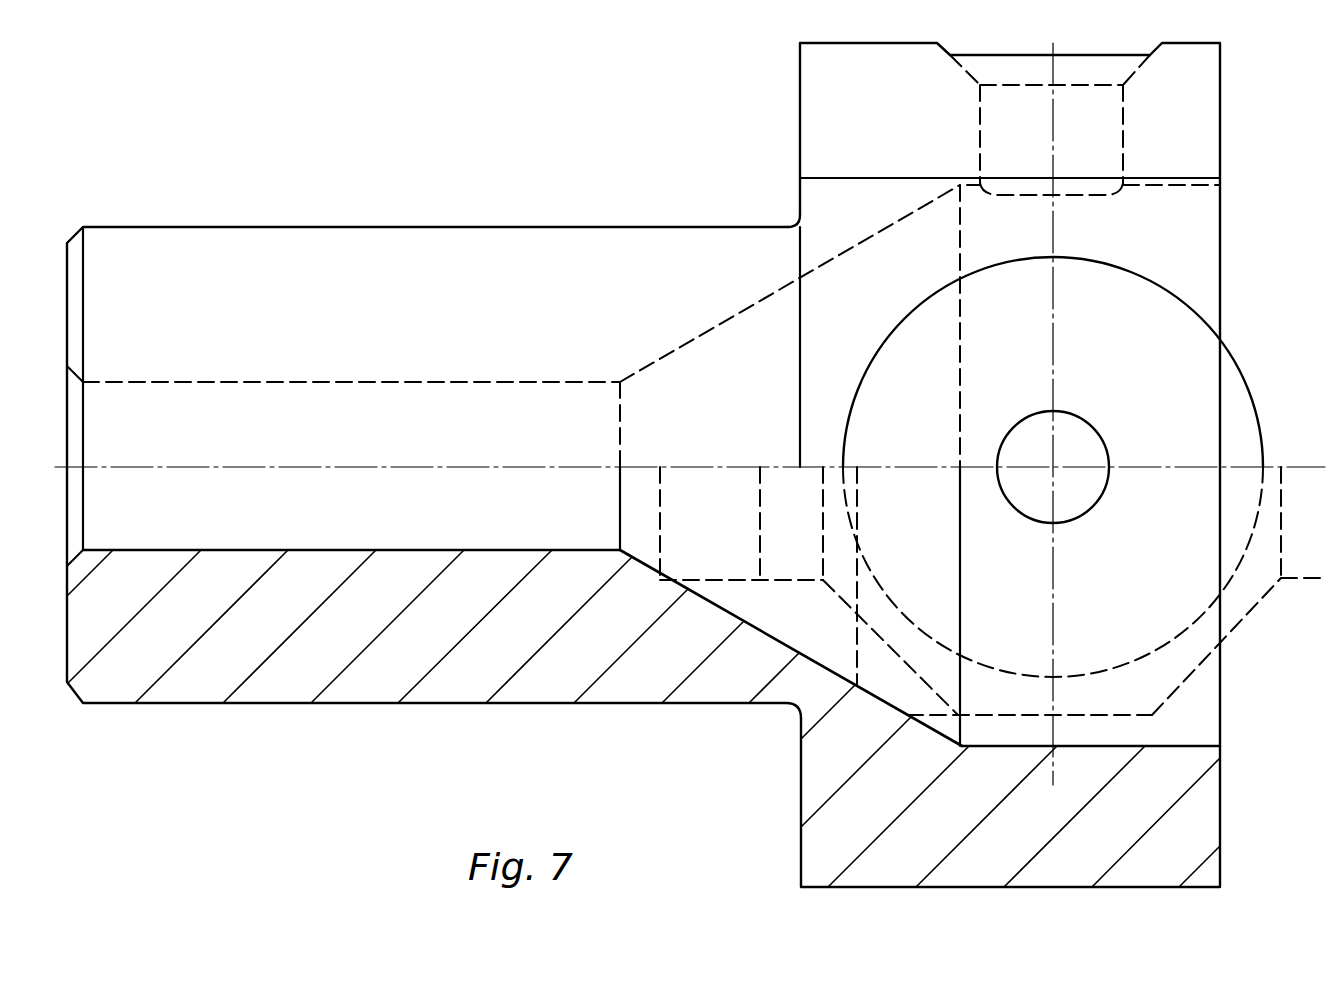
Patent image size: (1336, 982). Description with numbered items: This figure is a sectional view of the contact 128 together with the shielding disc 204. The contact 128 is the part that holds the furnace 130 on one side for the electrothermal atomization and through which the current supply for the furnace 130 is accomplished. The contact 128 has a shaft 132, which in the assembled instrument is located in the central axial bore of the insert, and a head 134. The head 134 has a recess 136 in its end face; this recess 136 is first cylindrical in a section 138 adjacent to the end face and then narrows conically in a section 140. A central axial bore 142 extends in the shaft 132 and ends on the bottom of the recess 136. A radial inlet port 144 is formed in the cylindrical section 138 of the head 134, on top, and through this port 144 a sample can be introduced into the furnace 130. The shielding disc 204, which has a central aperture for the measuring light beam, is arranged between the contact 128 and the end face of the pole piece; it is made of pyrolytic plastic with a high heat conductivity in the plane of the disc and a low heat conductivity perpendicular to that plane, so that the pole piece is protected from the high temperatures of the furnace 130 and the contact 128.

The contact 128 is at (697, 211).
The furnace 130 is at (1258, 620).
The shaft 132 is at (421, 241).
The head 134 is at (824, 838).
The recess 136 is at (1198, 692).
The cylindrical section 138 is at (1150, 745).
The conical section 140 is at (733, 624).
The central axial bore 142 is at (404, 520).
The radial inlet port 144 is at (1003, 137).
The shielding disc 204 is at (1218, 372).